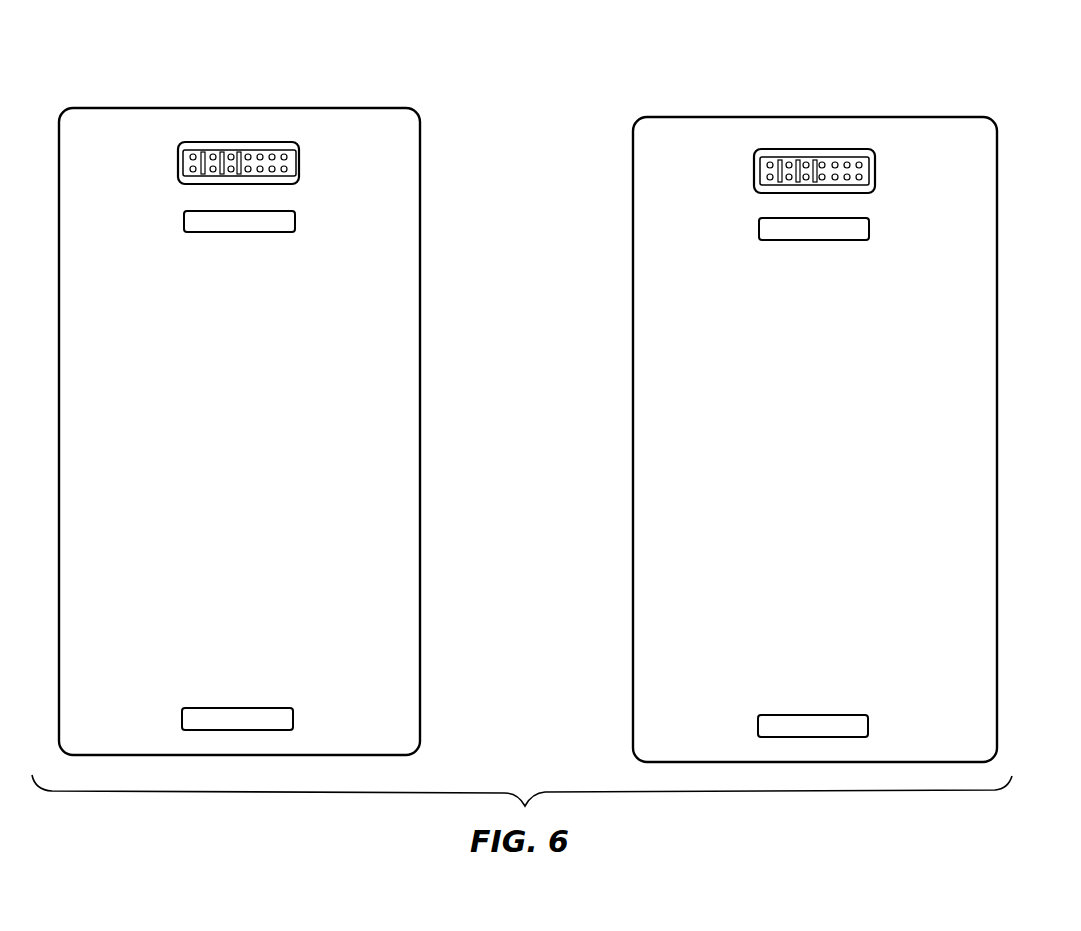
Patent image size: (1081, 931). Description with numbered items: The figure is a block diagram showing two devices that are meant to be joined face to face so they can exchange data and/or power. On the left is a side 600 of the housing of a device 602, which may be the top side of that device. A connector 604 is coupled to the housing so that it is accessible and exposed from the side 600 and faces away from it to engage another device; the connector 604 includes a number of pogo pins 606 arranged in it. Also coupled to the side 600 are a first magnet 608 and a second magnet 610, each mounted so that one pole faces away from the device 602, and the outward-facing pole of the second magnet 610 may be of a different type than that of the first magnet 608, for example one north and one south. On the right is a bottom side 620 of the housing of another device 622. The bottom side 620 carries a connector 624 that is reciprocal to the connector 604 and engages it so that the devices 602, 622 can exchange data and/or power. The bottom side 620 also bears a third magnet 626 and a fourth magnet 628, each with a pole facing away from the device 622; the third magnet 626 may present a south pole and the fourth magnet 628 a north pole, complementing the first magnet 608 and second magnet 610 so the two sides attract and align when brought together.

The side of housing 600 is at (172, 605).
The device 602 is at (382, 61).
The connector 604 is at (224, 142).
The pogo pins 606 is at (178, 171).
The first magnet 608 is at (238, 233).
The second magnet 610 is at (236, 707).
The bottom side 620 is at (747, 612).
The another device 622 is at (955, 70).
The connector 624 is at (803, 149).
The third magnet 626 is at (812, 242).
The fourth magnet 628 is at (812, 714).